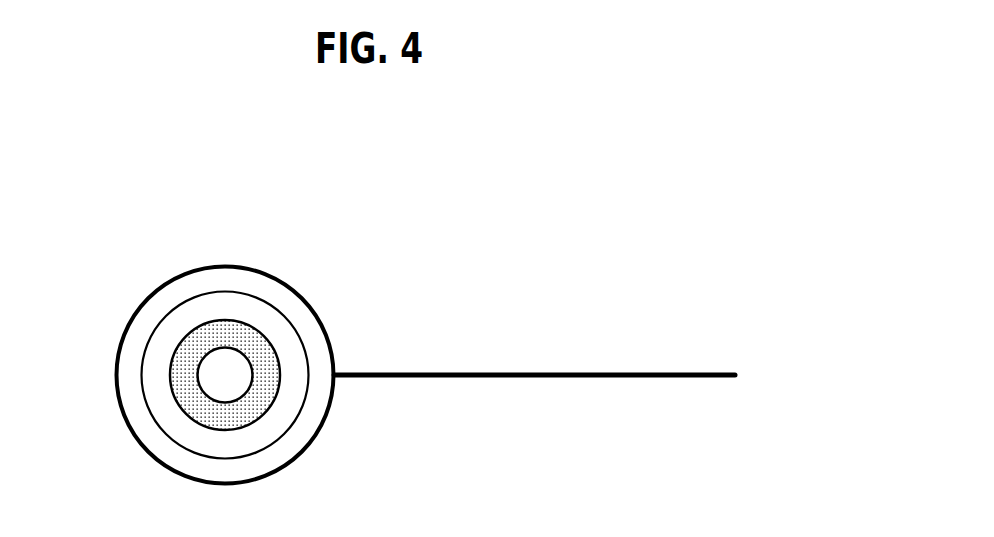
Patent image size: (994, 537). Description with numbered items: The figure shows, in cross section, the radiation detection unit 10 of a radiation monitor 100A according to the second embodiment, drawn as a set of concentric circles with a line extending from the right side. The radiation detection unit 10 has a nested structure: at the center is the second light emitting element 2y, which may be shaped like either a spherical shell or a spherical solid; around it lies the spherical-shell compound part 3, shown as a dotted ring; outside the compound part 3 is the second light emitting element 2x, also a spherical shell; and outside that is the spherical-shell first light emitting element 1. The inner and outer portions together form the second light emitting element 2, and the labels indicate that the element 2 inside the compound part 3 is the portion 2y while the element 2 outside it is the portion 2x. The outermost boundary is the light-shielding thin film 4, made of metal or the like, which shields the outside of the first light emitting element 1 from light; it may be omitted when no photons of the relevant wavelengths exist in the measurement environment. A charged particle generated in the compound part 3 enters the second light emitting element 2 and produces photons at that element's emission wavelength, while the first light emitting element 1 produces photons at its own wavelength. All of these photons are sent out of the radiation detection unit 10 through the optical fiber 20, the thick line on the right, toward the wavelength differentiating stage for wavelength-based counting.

The radiation monitor 100A is at (463, 165).
The radiation detection unit 10 is at (102, 205).
The first light emitting element 1 is at (152, 308).
The second light emitting element 2 is at (180, 375).
The second light emitting element 2x is at (158, 358).
The second light emitting element 2y is at (212, 373).
The compound part 3 is at (213, 333).
The light-shielding thin film 4 is at (292, 283).
The optical fiber 20 is at (532, 373).